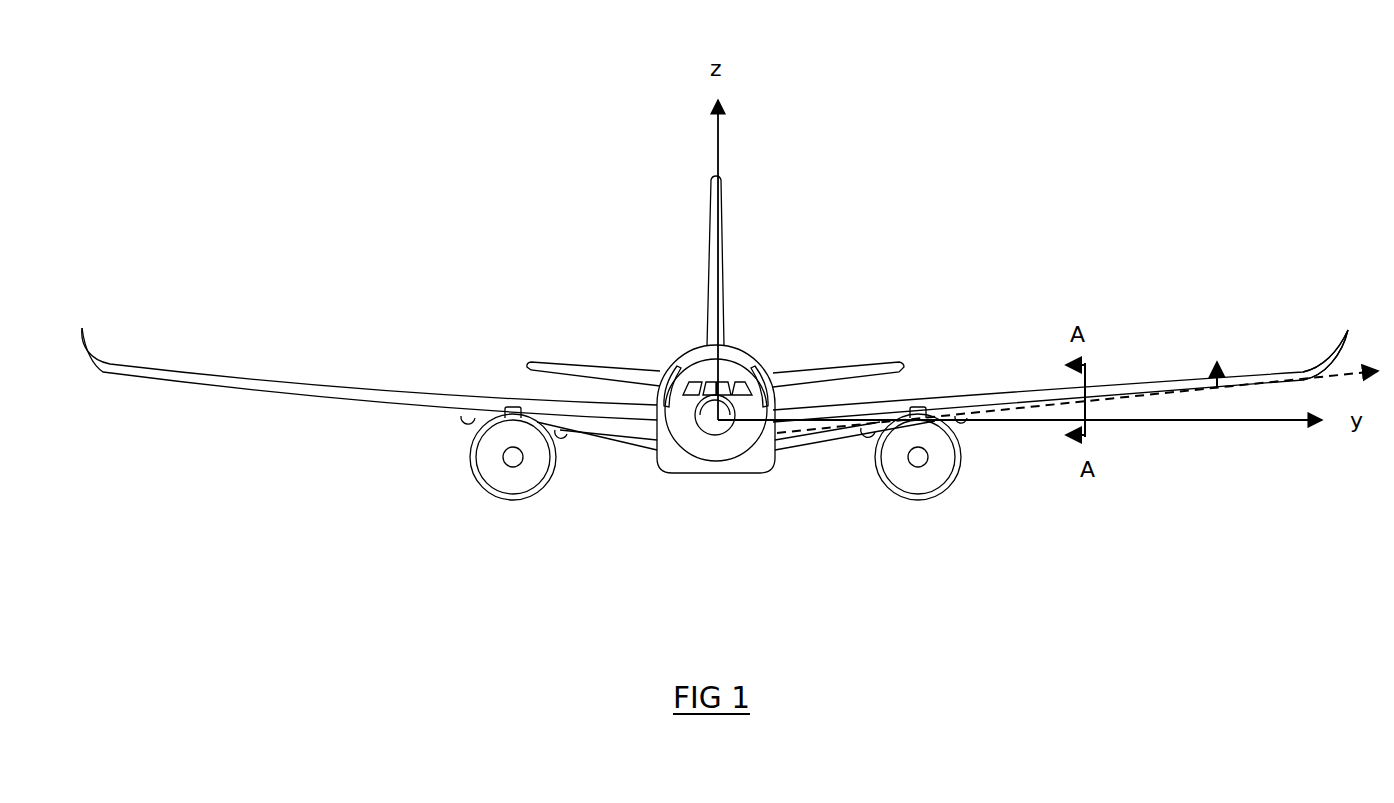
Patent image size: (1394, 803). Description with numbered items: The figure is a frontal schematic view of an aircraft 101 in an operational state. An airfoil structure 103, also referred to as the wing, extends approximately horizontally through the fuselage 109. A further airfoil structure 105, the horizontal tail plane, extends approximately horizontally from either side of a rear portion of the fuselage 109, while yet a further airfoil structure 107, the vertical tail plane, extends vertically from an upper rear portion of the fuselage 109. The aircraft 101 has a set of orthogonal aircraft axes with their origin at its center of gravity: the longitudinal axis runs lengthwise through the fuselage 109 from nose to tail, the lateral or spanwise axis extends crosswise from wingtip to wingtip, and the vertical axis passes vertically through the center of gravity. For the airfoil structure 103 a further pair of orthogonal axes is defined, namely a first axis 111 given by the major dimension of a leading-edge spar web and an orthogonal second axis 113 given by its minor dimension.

The aircraft 101 is at (537, 173).
The airfoil structure 103 is at (441, 402).
The further airfoil structure 105 is at (598, 360).
The yet further airfoil structure 107 is at (720, 212).
The fuselage 109 is at (679, 444).
The first axis 111 is at (1303, 375).
The second axis 113 is at (1213, 370).